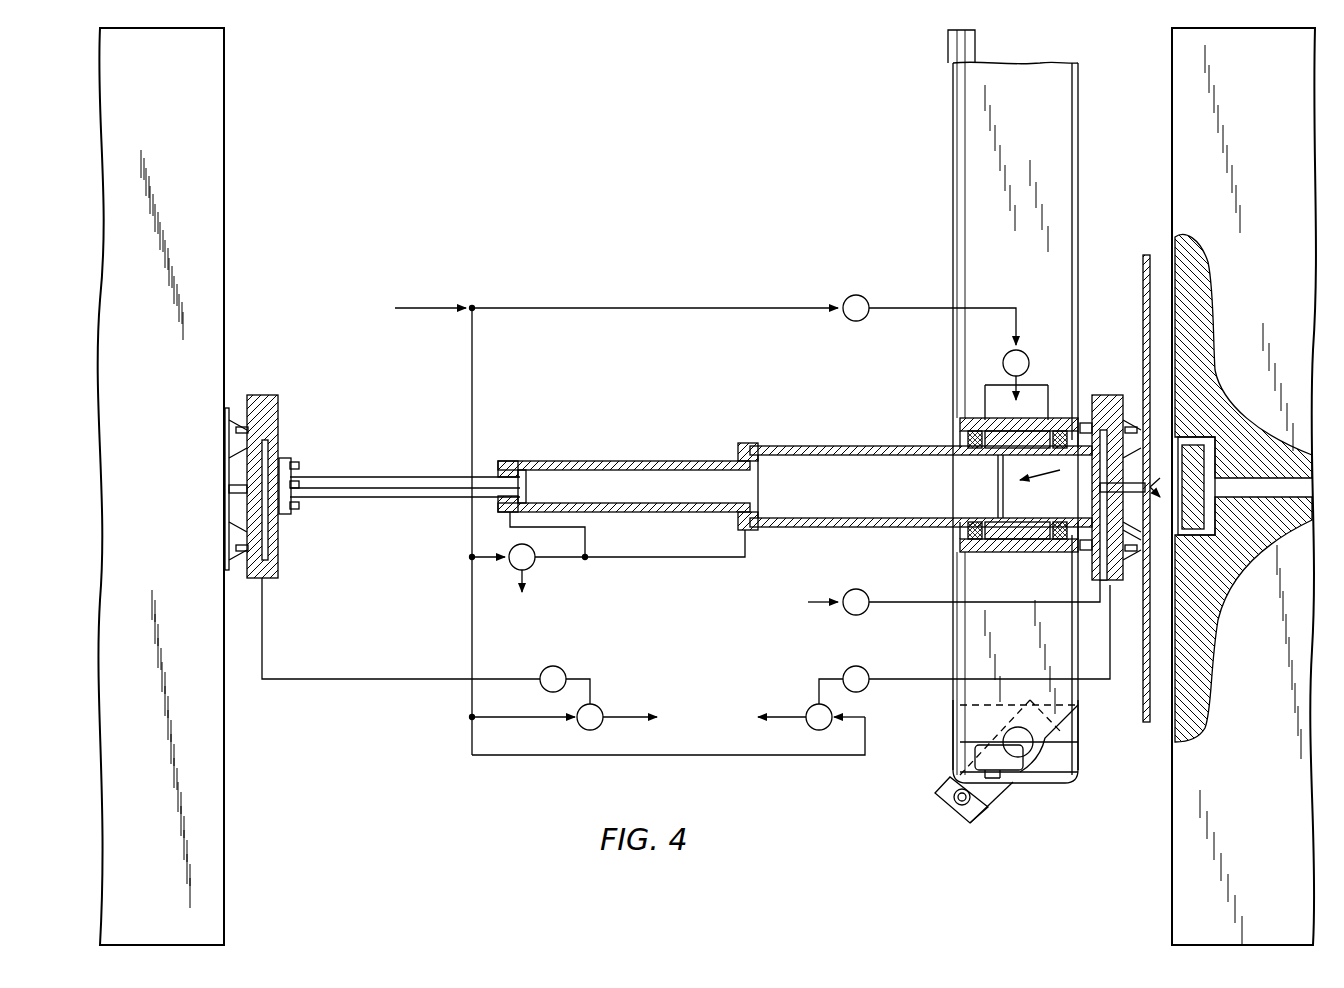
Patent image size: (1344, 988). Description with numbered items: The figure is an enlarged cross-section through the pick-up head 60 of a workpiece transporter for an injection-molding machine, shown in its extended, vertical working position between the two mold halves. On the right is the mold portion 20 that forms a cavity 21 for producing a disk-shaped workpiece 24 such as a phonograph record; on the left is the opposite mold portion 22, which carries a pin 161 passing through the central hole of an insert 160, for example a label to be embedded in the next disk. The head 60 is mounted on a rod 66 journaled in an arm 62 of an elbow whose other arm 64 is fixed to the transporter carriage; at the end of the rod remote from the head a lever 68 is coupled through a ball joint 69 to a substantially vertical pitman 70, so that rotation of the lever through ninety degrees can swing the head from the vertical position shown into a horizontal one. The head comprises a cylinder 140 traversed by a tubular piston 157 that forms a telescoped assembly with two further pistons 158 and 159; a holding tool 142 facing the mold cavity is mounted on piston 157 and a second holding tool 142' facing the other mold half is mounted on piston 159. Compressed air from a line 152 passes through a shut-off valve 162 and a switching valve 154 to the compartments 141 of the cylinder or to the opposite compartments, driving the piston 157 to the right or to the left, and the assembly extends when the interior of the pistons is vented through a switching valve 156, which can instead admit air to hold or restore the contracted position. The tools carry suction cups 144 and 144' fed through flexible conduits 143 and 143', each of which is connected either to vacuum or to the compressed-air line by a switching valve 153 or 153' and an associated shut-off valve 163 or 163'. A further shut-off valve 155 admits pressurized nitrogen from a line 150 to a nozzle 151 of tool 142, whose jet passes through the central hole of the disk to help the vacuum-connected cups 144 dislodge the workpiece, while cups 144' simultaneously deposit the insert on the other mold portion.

The mold portion 20 is at (1172, 80).
The cavity 21 is at (1180, 250).
The mold portion 22 is at (225, 125).
The disk-shaped workpiece 24 is at (1145, 265).
The pick-up head 60 is at (962, 636).
The arm 62 is at (1080, 757).
The arm 64 is at (1078, 145).
The rod 66 is at (1046, 772).
The lever 68 is at (985, 808).
The ball joint 69 is at (948, 802).
The pitman 70 is at (950, 52).
The cylinder 140 is at (1020, 555).
The compartment 141 is at (985, 435).
The holding tool 142 is at (1101, 466).
The holding tool 142' is at (269, 463).
The flexible conduit 143 is at (1006, 632).
The flexible conduit 143' is at (401, 628).
The suction cups 144 is at (1202, 431).
The suction cups 144' is at (215, 490).
The line 150 is at (815, 598).
The nozzle 151 is at (1215, 580).
The line 152 is at (428, 312).
The switching valve 153 is at (668, 709).
The switching valve 153' is at (595, 697).
The switching valve 154 is at (1030, 340).
The shut-off valve 155 is at (866, 590).
The switching valve 156 is at (535, 568).
The tubular piston 157 is at (885, 446).
The piston 158 is at (578, 462).
The piston 159 is at (418, 476).
The insert 160 is at (235, 572).
The pin 161 is at (291, 460).
The shut-off valve 162 is at (850, 295).
The shut-off valve 163 is at (849, 666).
The shut-off valve 163' is at (572, 662).